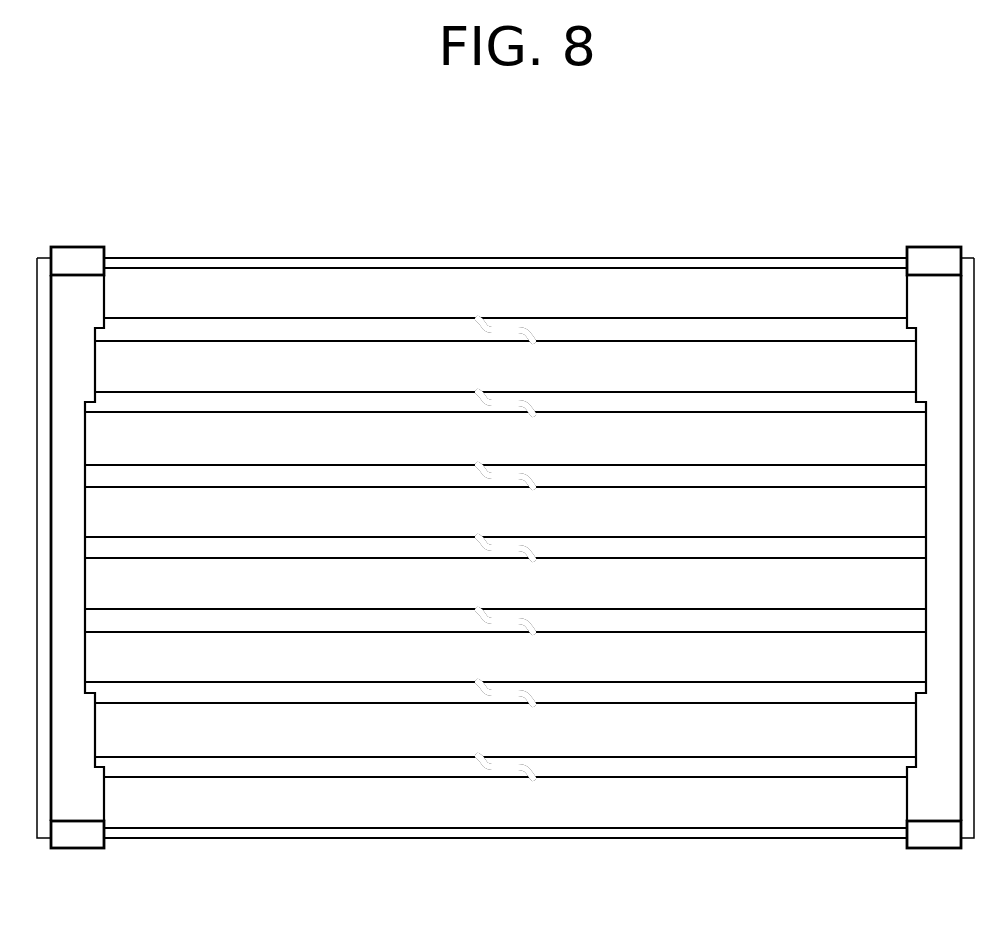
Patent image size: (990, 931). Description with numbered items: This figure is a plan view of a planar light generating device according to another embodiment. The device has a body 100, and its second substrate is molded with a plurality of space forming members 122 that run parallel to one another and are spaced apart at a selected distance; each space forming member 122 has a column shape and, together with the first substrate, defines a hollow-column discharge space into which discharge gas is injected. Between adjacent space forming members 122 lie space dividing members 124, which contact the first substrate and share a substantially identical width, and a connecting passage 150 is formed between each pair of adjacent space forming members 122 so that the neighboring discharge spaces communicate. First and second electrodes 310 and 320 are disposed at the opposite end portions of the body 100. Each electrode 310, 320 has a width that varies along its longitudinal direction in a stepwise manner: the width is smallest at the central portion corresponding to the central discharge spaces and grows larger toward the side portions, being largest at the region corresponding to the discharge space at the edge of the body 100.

The body 100 is at (505, 577).
The space forming member 122 is at (262, 800).
The space dividing member 124 is at (372, 763).
The connecting passage 150 is at (510, 765).
The first electrode 310 is at (73, 808).
The second electrode 320 is at (940, 808).